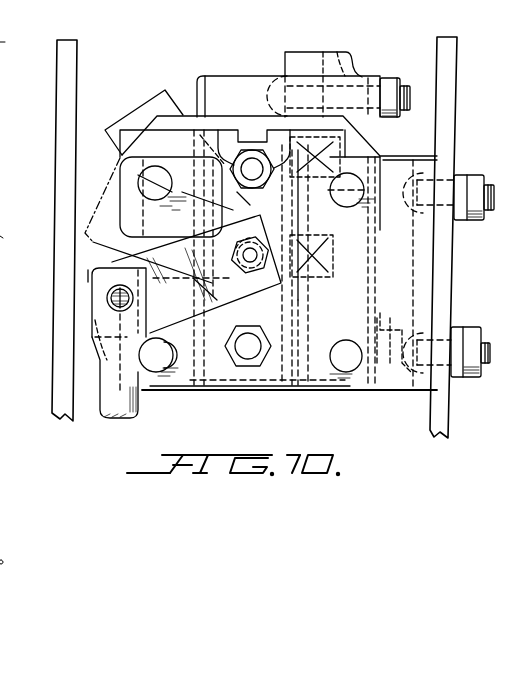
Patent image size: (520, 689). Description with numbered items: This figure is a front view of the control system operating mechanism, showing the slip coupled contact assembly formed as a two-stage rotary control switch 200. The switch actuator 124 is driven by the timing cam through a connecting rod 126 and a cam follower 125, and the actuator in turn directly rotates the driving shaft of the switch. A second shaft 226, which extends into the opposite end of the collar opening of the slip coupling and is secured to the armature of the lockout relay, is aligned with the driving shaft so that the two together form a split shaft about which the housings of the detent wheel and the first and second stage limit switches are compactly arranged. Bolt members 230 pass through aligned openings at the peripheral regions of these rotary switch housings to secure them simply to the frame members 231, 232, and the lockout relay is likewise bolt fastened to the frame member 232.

The two-stage rotary control switch 200 is at (283, 66).
The frame member 232 is at (217, 90).
The frame member 231 is at (395, 165).
The second shaft 226 is at (243, 246).
The connecting rod 126 is at (118, 299).
The switch actuator 124 is at (176, 309).
The cam follower 125 is at (140, 404).
The bolt members 230 is at (247, 352).